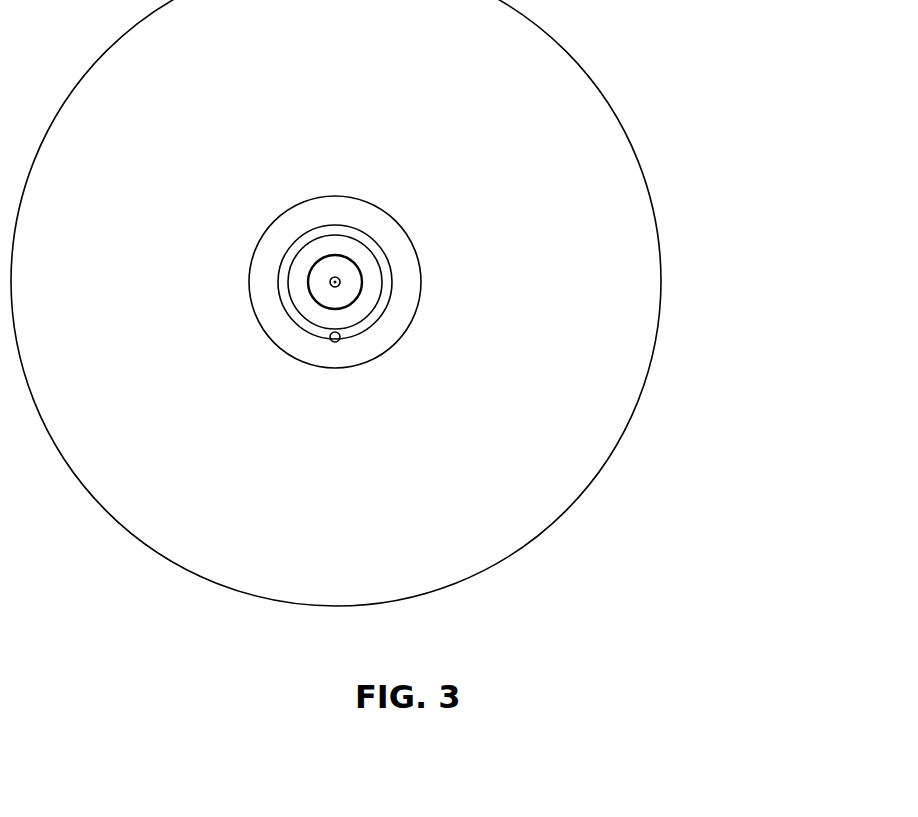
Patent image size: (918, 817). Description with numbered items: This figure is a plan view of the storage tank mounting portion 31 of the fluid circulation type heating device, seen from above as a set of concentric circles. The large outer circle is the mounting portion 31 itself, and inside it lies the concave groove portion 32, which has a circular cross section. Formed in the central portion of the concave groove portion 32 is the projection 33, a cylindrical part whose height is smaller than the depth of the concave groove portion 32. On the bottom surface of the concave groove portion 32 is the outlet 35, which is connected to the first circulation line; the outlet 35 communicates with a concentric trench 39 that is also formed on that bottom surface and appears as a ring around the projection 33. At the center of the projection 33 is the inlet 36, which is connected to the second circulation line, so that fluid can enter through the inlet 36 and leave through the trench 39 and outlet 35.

The storage tank mounting portion 31 is at (684, 238).
The concave groove portion 32 is at (366, 204).
The projection 33 is at (361, 277).
The outlet 35 is at (337, 343).
The inlet 36 is at (330, 281).
The concentric trench 39 is at (312, 234).